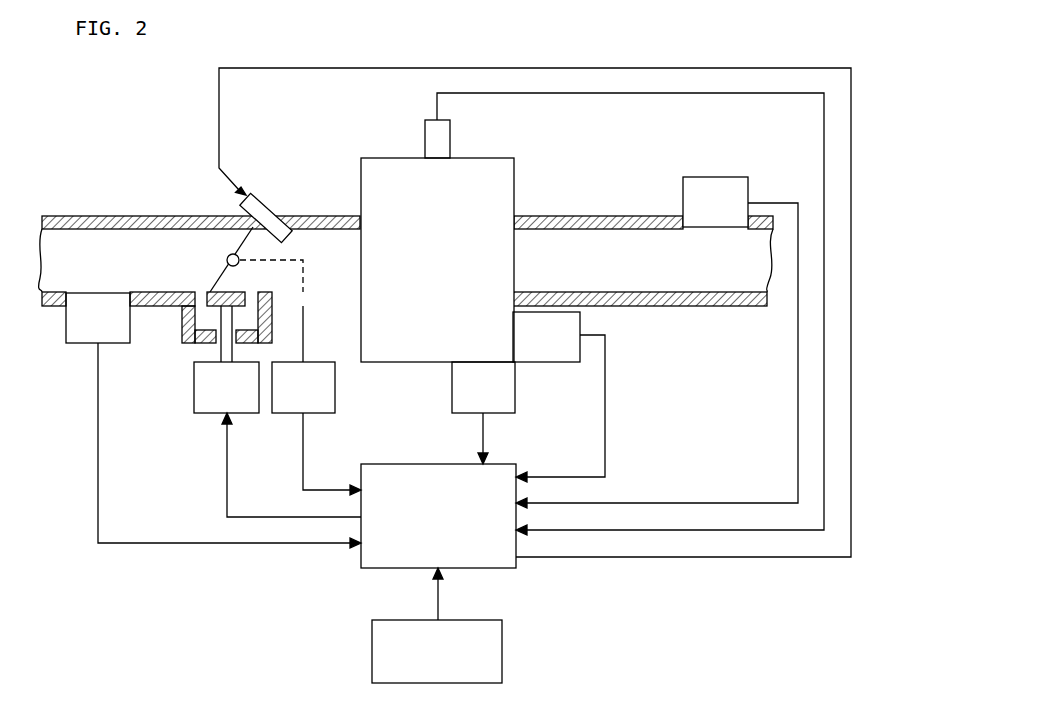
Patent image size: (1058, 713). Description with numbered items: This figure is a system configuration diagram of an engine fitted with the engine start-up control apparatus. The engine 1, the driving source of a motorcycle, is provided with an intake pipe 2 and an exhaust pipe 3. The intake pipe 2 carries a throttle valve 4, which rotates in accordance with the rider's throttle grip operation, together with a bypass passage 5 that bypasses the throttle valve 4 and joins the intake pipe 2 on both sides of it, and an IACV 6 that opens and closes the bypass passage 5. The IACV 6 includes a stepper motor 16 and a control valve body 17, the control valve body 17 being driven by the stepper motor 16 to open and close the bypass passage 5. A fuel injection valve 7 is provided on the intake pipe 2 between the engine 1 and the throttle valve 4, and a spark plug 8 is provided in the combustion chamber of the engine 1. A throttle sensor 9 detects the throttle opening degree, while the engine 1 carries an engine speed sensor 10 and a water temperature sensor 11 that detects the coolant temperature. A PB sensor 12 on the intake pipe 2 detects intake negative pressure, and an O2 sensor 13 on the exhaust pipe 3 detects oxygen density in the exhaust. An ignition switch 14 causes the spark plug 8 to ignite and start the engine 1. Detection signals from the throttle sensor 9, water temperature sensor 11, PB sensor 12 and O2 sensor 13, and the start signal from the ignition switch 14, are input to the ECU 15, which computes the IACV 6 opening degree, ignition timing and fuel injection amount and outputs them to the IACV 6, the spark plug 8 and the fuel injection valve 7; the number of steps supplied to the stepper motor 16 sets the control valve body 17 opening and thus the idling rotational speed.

The engine 1 is at (516, 181).
The intake pipe 2 is at (323, 214).
The exhaust pipe 3 is at (633, 215).
The throttle valve 4 is at (227, 259).
The bypass passage 5 is at (182, 318).
The IACV 6 is at (165, 405).
The fuel injection valve 7 is at (262, 201).
The spark plug 8 is at (452, 139).
The throttle sensor (TH sensor) 9 is at (288, 415).
The engine speed sensor (Ne sensor) 10 is at (466, 414).
The water temperature sensor (TW sensor) 11 is at (547, 363).
The PB sensor 12 is at (83, 347).
The O2 sensor 13 is at (750, 184).
The ignition switch 14 is at (504, 648).
The engine control unit (ECU) 15 is at (495, 569).
The stepper motor 16 is at (200, 410).
The control valve body 17 is at (220, 350).